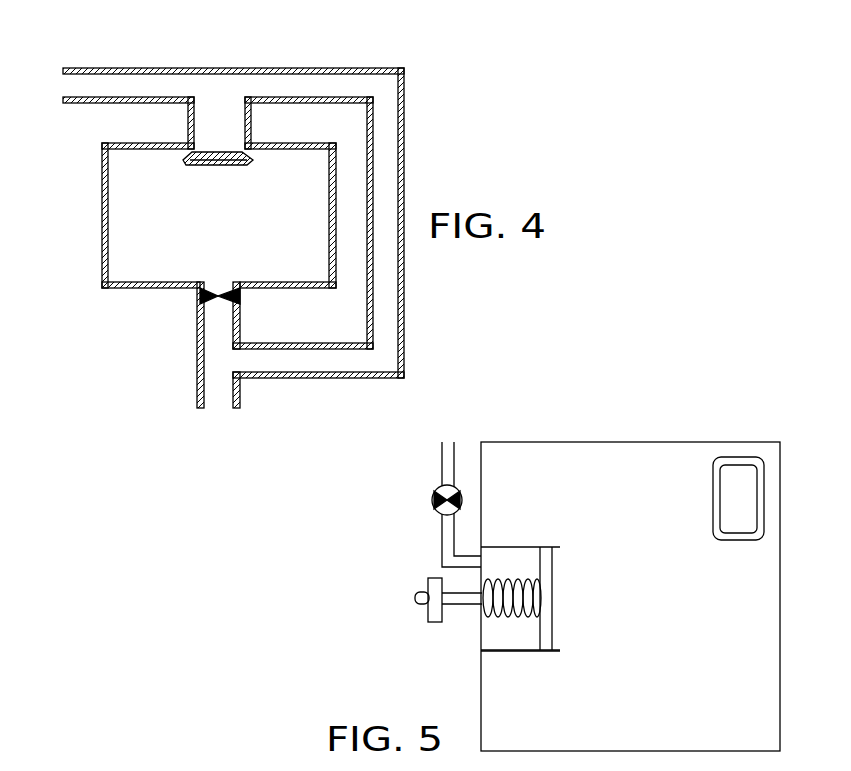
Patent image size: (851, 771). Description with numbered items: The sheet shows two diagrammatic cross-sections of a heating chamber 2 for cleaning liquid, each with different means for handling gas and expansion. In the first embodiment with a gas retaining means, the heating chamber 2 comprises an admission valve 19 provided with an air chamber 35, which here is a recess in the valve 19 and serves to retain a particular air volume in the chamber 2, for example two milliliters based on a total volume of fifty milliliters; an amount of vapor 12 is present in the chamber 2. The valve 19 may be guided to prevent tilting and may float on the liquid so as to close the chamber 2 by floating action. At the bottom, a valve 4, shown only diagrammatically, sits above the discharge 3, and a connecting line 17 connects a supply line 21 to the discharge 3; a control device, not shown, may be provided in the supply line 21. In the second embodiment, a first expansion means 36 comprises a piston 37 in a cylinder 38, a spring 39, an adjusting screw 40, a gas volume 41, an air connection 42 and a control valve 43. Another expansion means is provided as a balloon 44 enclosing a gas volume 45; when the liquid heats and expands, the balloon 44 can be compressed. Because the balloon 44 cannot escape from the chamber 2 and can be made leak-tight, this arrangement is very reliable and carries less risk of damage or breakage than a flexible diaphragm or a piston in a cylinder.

In FIG. 4, the heating chamber 2 is at (103, 172).
In FIG. 5, the heating chamber 2 is at (779, 598).
In FIG. 4, the discharge 3 is at (217, 383).
In FIG. 4, the valve 4 is at (218, 296).
In FIG. 4, the amount of vapor 12 is at (140, 243).
In FIG. 4, the connecting line 17 is at (384, 180).
In FIG. 4, the admission valve 19 is at (227, 155).
In FIG. 4, the supply line 21 is at (105, 86).
In FIG. 4, the air chamber 35 is at (212, 160).
In FIG. 5, the first expansion means 36 is at (363, 579).
In FIG. 5, the piston 37 is at (544, 581).
In FIG. 5, the cylinder 38 is at (510, 651).
In FIG. 5, the spring 39 is at (502, 600).
In FIG. 5, the adjusting screw 40 is at (432, 602).
In FIG. 5, the gas volume 41 is at (508, 560).
In FIG. 5, the air connection 42 is at (447, 539).
In FIG. 5, the control valve 43 is at (433, 500).
In FIG. 5, the balloon 44 is at (717, 497).
In FIG. 5, the gas volume 45 is at (738, 487).